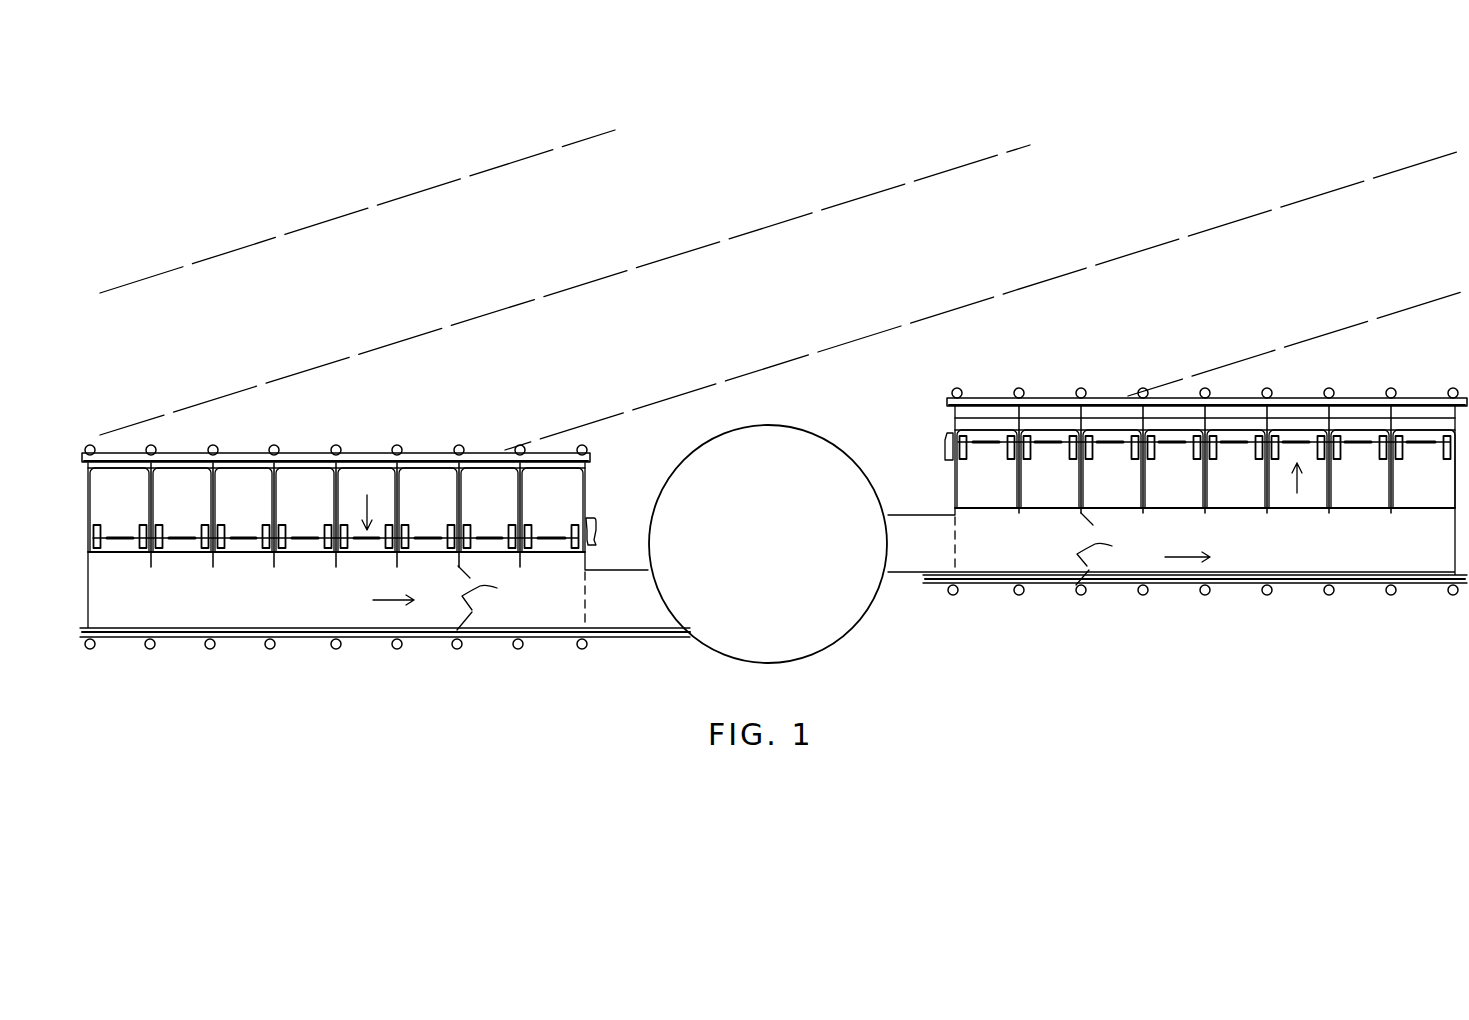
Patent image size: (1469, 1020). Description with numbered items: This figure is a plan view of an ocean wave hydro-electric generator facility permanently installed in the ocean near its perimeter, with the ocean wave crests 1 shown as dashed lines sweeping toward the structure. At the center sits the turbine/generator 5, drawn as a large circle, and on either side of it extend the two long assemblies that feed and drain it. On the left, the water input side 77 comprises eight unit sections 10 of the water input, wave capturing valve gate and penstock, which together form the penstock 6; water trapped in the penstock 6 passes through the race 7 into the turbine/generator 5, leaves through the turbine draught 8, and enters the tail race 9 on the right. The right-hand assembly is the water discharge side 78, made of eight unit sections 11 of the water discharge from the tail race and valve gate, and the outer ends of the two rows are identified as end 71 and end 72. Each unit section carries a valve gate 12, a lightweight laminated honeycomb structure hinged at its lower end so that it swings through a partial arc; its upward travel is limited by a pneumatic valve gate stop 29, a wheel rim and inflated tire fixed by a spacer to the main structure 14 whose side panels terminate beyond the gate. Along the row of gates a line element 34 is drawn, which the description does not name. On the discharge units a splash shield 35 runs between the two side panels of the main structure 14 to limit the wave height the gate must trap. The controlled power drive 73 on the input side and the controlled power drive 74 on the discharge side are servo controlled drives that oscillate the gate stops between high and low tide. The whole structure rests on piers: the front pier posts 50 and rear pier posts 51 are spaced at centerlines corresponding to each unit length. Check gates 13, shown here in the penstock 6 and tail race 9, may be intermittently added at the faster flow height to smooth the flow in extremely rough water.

The ocean wave crest 1 is at (405, 196).
The turbine/generator 5 is at (810, 430).
The penstock 6 is at (175, 598).
The race 7 is at (600, 590).
The turbine draught 8 is at (900, 556).
The tail race 9 is at (1340, 546).
The unit section of the water input, wave capturing valve gate and penstock 10 is at (225, 505).
The unit section of the water discharge from the tail race and valve gate 11 is at (1215, 489).
The valve gate 12 is at (290, 468).
The check gates 13 is at (798, 571).
The main structure / side panel 14 is at (405, 492).
The pneumatic valve gate stop 29 is at (408, 526).
The conveyor belt / chain 34 is at (482, 538).
The splash shield 35 is at (1357, 418).
The front pier posts 50 is at (401, 447).
The rear pier posts 51 is at (333, 649).
The end 71 is at (93, 503).
The end 72 is at (1455, 490).
The controlled power drive 73 is at (590, 520).
The controlled power drive 74 is at (945, 456).
The water input side 77 is at (290, 418).
The water discharge side 78 is at (1148, 378).